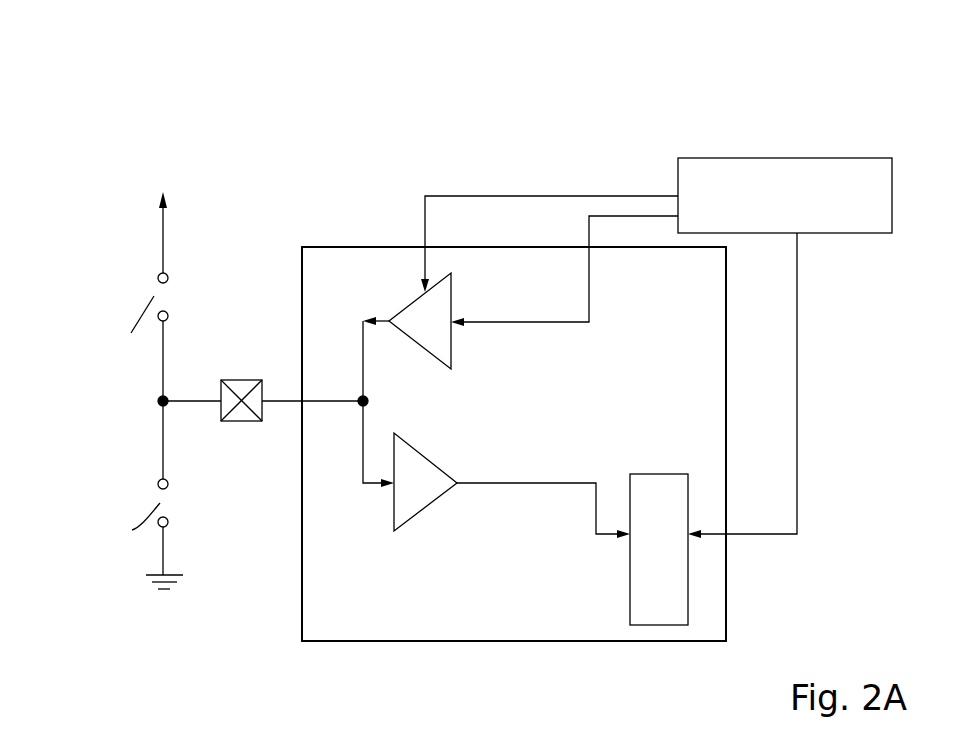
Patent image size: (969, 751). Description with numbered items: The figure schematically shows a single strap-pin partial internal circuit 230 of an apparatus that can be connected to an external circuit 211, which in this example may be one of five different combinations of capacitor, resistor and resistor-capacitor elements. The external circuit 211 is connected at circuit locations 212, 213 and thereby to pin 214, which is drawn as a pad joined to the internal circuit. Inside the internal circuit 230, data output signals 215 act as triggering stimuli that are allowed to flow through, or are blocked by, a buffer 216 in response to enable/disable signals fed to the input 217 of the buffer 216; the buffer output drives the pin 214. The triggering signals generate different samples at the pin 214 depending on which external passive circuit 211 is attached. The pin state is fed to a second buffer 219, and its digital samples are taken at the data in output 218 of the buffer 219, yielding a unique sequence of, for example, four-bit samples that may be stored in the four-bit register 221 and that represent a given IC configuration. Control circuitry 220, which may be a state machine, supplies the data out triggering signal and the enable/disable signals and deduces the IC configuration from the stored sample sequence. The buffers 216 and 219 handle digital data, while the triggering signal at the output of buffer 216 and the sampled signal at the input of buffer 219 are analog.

The external circuit 211 is at (82, 386).
The circuit location 212 is at (126, 311).
The circuit location 213 is at (126, 513).
The pin 214 is at (236, 380).
The data output signals 215 is at (527, 323).
The buffer 216 is at (425, 350).
The input 217 is at (542, 196).
The data in output 218 is at (541, 483).
The buffer 219 is at (420, 513).
The control circuitry 220 is at (763, 158).
The 4-bit register 221 is at (660, 478).
The internal circuit 230 is at (389, 116).